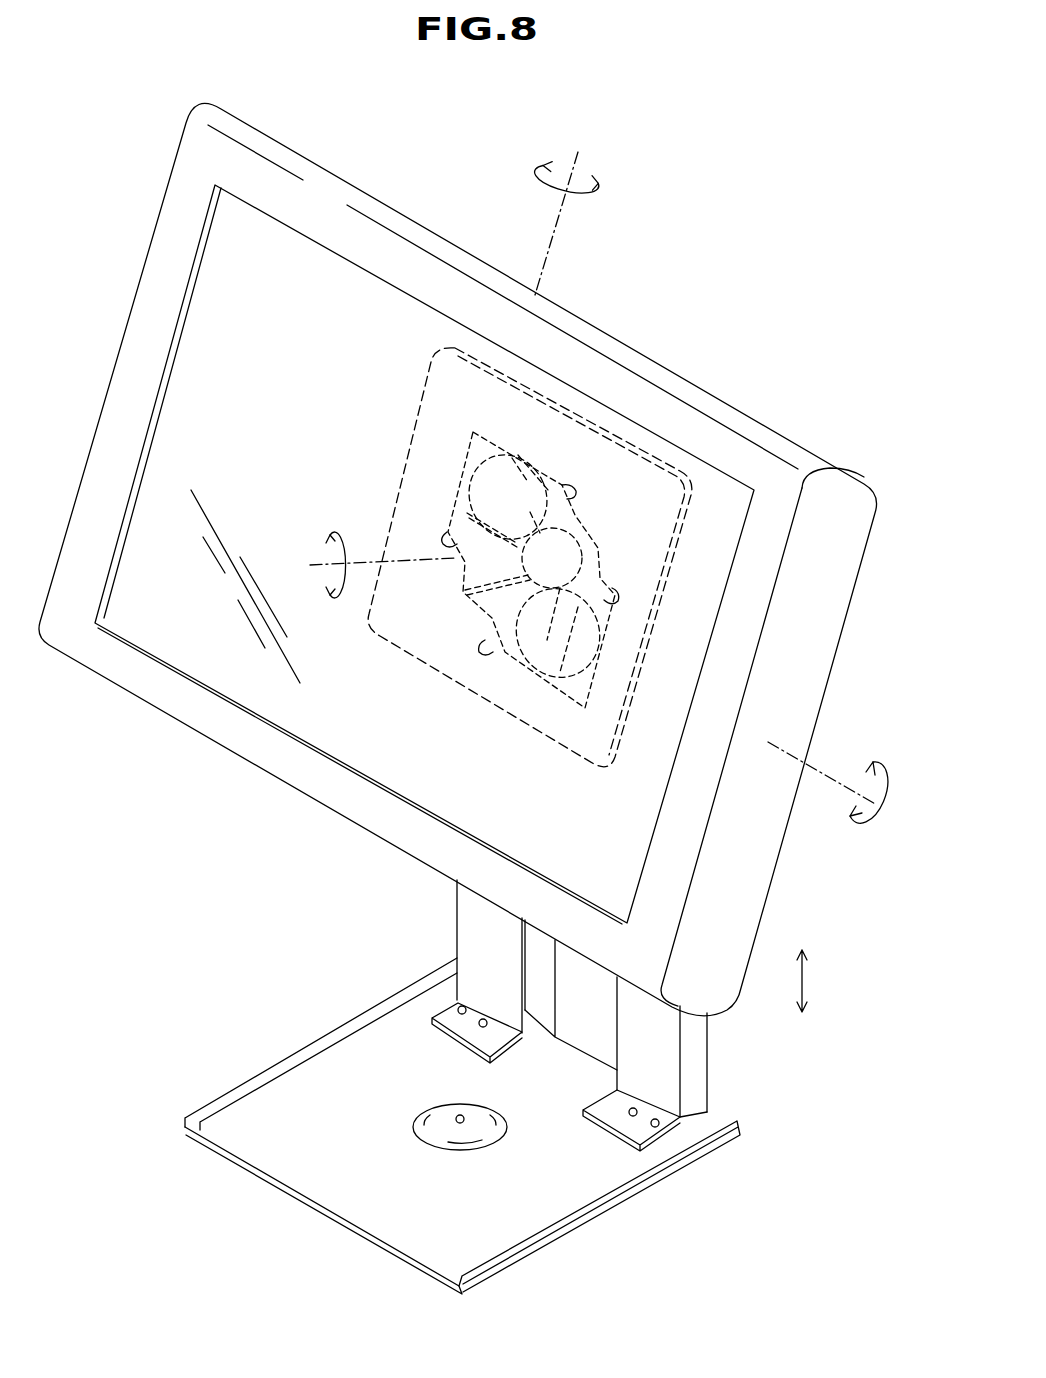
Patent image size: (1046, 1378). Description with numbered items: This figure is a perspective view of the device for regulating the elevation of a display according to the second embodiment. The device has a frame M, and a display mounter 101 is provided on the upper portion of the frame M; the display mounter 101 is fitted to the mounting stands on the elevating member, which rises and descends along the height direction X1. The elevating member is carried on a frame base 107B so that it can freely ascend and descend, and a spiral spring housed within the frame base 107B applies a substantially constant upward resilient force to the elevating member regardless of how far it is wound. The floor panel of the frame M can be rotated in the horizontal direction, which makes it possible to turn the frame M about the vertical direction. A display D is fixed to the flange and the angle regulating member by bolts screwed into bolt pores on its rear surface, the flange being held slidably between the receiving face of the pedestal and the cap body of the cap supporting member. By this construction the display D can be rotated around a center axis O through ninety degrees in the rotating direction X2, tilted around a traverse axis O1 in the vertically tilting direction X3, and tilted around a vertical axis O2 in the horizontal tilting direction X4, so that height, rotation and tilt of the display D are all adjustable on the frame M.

The display D is at (402, 260).
The display mounter 101 is at (615, 425).
The frame base 107B is at (478, 919).
The center axis O is at (372, 568).
The traverse axis O1 is at (840, 787).
The vertical axis O2 is at (566, 209).
The height direction X1 is at (821, 981).
The rotating direction X2 is at (336, 551).
The vertically tilting direction X3 is at (869, 777).
The horizontal tilting direction X4 is at (572, 195).
The frame M is at (500, 1078).